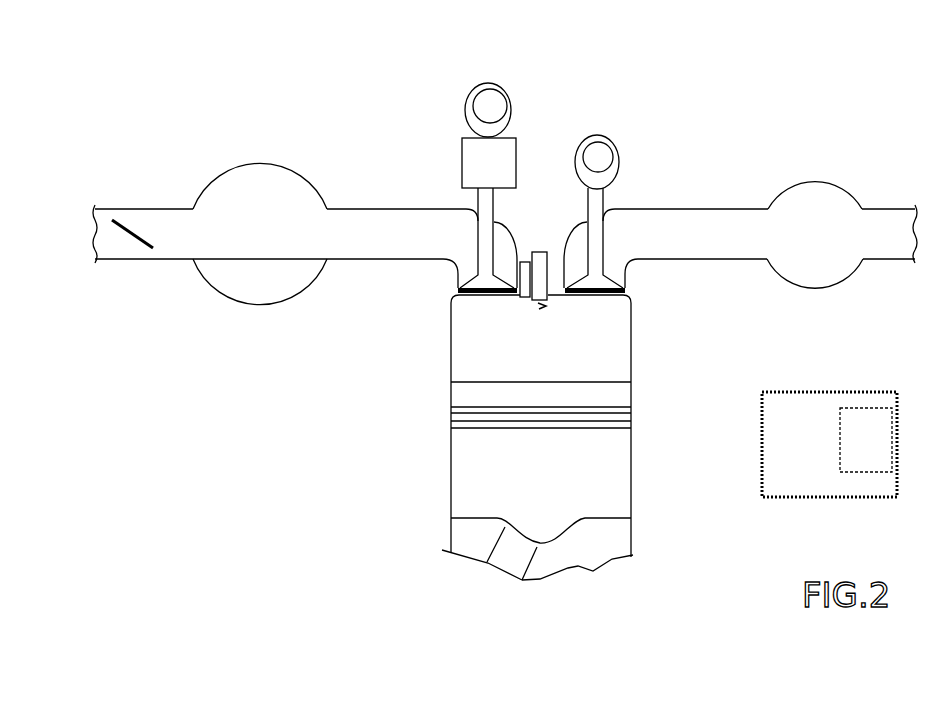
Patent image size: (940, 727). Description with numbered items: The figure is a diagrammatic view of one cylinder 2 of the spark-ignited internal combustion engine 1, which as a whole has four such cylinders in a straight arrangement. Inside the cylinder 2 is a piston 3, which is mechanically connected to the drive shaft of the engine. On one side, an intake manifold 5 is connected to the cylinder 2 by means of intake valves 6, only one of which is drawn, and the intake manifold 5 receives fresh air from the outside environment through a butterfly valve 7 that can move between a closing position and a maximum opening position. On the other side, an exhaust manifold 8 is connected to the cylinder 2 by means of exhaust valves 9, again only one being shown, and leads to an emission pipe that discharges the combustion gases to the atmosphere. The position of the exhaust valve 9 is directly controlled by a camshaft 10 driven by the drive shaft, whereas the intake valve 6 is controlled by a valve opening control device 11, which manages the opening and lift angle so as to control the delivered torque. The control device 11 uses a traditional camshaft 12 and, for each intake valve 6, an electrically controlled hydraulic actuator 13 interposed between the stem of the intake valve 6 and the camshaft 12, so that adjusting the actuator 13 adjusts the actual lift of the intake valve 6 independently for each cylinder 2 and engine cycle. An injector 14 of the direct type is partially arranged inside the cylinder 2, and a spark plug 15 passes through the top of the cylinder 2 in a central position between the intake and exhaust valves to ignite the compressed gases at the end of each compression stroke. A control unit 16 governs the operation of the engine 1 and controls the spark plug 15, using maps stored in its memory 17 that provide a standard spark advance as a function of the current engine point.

The internal combustion engine 1 is at (226, 94).
The cylinder 2 is at (468, 357).
The piston 3 is at (601, 461).
The intake manifold 5 is at (270, 198).
The intake valve 6 is at (483, 294).
The butterfly valve 7 is at (128, 236).
The exhaust manifold 8 is at (822, 212).
The exhaust valve 9 is at (596, 294).
The camshaft 10 is at (598, 157).
The valve opening control device 11 is at (414, 94).
The camshaft 12 is at (502, 107).
The hydraulic actuator 13 is at (489, 163).
The injector 14 is at (525, 262).
The spark plug 15 is at (540, 252).
The control unit 16 is at (829, 444).
The memory 17 is at (866, 440).